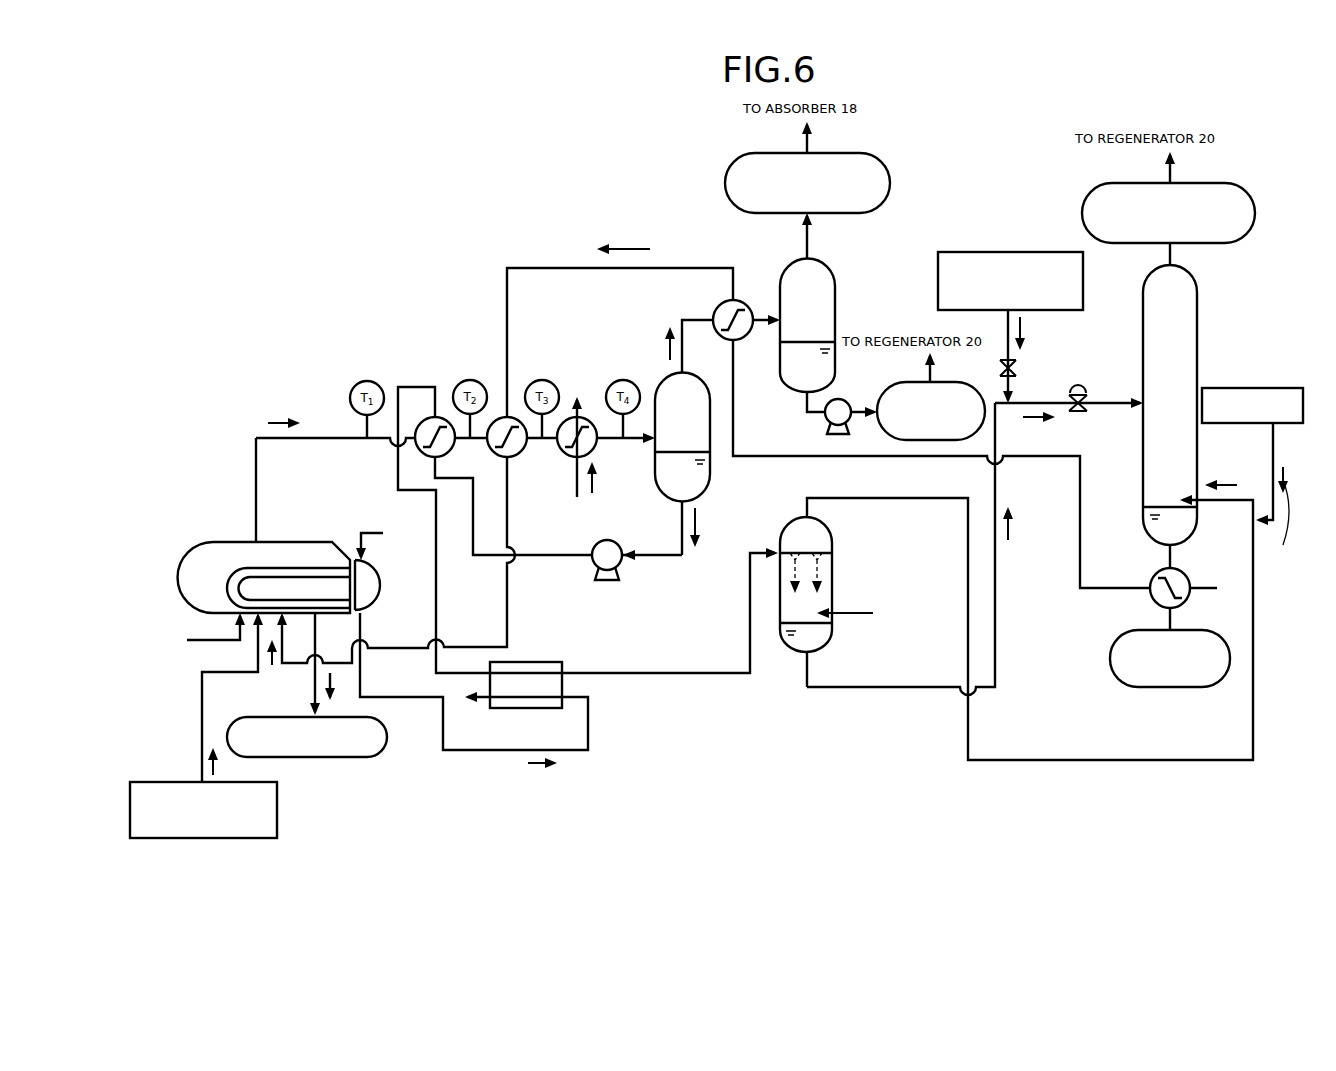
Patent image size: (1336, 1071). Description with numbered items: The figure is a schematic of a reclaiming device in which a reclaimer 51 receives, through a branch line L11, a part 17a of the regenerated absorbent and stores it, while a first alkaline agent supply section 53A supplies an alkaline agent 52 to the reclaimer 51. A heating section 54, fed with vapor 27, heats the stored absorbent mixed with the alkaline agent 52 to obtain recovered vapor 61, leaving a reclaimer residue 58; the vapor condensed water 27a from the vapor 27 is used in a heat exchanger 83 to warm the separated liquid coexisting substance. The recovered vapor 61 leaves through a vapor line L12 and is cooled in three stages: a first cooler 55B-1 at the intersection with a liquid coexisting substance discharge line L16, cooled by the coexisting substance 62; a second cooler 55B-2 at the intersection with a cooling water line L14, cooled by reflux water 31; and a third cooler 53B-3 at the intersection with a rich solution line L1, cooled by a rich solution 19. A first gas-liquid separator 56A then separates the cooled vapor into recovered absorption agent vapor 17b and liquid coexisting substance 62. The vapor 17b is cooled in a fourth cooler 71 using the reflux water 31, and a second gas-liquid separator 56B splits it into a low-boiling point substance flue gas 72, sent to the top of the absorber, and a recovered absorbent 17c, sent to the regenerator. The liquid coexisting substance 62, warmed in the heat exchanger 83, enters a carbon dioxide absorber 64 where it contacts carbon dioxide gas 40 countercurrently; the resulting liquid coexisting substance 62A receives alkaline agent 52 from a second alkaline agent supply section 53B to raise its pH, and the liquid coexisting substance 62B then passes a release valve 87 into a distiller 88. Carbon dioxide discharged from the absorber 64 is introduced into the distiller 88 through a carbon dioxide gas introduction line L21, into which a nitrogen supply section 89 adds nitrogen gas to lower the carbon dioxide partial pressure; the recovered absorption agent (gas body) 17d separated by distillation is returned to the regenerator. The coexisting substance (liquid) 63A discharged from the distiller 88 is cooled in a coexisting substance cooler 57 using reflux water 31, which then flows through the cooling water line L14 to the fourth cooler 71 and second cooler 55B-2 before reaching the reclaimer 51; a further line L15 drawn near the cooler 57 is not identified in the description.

The reclaimer 51 is at (308, 527).
The heating section 54 is at (228, 580).
The vapor 27 is at (370, 533).
The recovered vapor 61 is at (282, 423).
The vapor line L12 is at (330, 437).
The first cooler 55B-1 is at (450, 417).
The second cooler 55B-2 is at (513, 417).
The third cooler 53B-3 is at (592, 415).
The rich solution line L1 is at (566, 481).
The rich solution 19 is at (596, 480).
The recovered absorption agent vapor 17b is at (662, 345).
The first gas-liquid separator 56A is at (710, 465).
The coexisting substance 62 is at (697, 520).
The liquid coexisting substance discharge line L16 is at (657, 557).
The fourth cooler 71 is at (745, 305).
The low-boiling point substance flue gas 72 is at (890, 183).
The second gas-liquid separator 56B is at (845, 303).
The second alkaline agent supply section 53B is at (1008, 252).
The alkaline agent 52 is at (1024, 322).
The recovered absorbent 17c is at (968, 378).
The release valve 87 is at (1084, 388).
The liquid coexisting substance 62B is at (1035, 420).
The distiller 88 is at (1197, 310).
The recovered absorption agent (gas body) 17d is at (1210, 183).
The nitrogen supply section 89 is at (1250, 388).
The CO2 gas 40 is at (1232, 486).
The coexisting substance cooler 57 is at (1186, 574).
The CO2 absorber 64 is at (845, 517).
The liquid coexisting substance after CO2 absorption 62A is at (1010, 535).
The cooling water line L14 is at (290, 665).
The coexisting substance line L15 is at (1090, 590).
The reflux water 31 is at (622, 249).
The coexisting substance (liquid) 63A is at (1170, 687).
The CO2 gas introduction line L21 is at (1052, 762).
The reclaimer residue 58 is at (387, 737).
The first alkaline agent supply section 53A is at (170, 782).
The heat exchanger 83 is at (528, 708).
The vapor condensed water 27a is at (532, 765).
The part of absorbent 17a is at (230, 653).
The branch line L11 is at (205, 640).